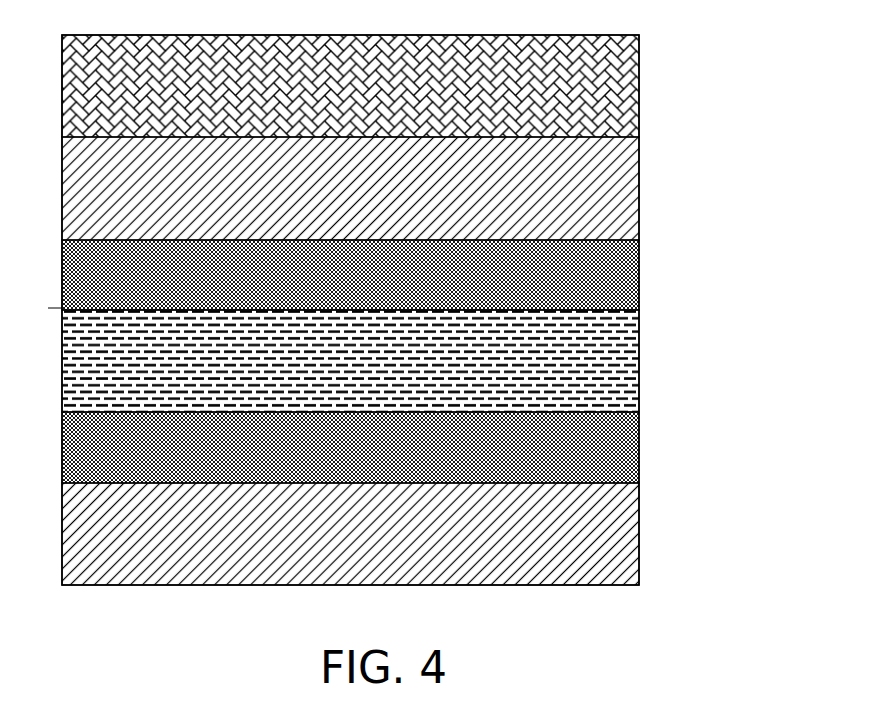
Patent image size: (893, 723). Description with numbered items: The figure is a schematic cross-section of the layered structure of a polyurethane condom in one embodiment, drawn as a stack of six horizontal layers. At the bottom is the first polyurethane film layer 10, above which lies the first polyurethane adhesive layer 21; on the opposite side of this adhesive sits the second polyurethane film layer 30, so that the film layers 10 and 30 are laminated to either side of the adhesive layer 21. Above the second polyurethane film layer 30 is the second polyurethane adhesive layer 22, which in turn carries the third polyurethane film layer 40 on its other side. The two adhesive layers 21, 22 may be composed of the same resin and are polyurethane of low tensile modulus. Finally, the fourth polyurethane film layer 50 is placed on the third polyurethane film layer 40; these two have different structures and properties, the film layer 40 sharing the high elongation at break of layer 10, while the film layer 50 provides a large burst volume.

The first polyurethane film layer 10 is at (639, 537).
The first polyurethane adhesive layer 21 is at (639, 457).
The second polyurethane adhesive layer 22 is at (639, 287).
The second polyurethane film layer 30 is at (639, 379).
The third polyurethane film layer 40 is at (639, 193).
The fourth polyurethane film layer 50 is at (639, 92).